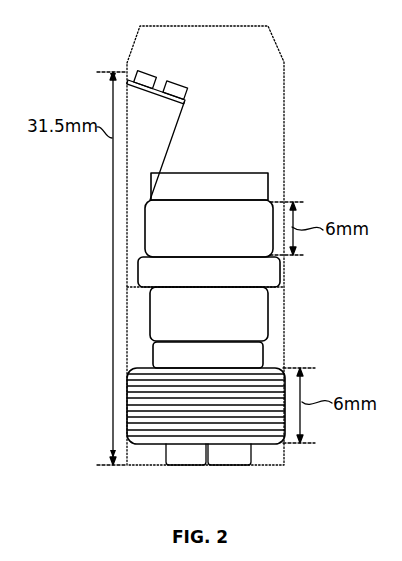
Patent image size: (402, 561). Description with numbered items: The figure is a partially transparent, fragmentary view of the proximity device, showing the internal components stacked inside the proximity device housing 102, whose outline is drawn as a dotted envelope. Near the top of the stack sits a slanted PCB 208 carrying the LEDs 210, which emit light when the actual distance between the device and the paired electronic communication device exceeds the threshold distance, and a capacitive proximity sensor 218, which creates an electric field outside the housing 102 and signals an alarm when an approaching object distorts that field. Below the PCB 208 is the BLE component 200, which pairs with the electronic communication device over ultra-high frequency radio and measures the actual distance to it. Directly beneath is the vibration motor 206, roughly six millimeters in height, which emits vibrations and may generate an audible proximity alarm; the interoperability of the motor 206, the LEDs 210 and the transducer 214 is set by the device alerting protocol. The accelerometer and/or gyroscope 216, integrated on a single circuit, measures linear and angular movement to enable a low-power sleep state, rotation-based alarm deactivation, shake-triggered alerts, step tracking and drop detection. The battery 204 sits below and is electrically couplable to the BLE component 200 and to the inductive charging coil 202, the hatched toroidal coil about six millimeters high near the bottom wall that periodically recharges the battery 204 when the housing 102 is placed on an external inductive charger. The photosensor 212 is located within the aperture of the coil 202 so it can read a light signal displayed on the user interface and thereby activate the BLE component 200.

The proximity device housing 102 is at (280, 63).
The BLE component 200 is at (252, 182).
The inductive charging coil 202 is at (267, 366).
The battery 204 is at (268, 313).
The vibration motor 206 is at (153, 220).
The PCB 208 is at (172, 140).
The LEDs 210 is at (148, 82).
The photosensor 212 is at (205, 465).
The transducer 214 is at (170, 353).
The accelerometer and/or gyroscope 216 is at (272, 270).
The capacitive proximity sensor 218 is at (180, 88).